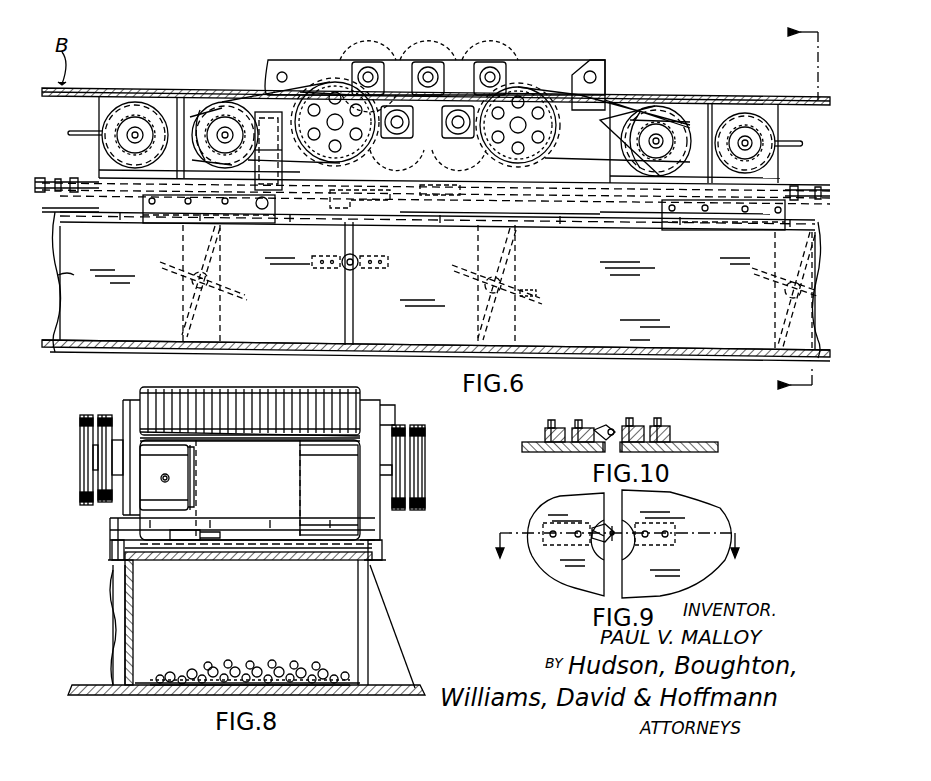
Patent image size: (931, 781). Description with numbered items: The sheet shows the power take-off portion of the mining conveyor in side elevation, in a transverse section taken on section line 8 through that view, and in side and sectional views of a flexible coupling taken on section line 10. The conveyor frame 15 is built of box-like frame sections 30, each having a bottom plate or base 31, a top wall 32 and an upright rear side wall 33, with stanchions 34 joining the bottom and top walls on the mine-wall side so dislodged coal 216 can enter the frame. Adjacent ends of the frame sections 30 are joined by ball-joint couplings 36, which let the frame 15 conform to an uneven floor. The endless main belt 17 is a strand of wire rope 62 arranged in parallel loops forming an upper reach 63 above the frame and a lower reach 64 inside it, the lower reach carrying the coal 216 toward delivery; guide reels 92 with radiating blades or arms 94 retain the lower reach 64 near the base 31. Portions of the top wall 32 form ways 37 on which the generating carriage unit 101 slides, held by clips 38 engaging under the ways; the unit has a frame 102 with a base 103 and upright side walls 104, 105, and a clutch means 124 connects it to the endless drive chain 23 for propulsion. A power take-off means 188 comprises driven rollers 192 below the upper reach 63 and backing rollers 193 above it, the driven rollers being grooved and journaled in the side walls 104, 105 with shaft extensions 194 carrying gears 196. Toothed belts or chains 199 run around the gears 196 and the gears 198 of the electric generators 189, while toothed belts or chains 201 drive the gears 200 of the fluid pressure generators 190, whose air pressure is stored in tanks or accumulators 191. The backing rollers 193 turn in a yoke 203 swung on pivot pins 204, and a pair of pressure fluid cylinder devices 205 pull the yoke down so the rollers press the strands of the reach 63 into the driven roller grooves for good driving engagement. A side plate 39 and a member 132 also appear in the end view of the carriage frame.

In FIG. 6, the section line 8— 8 is at (787, 210).
In FIG. 9, the section line 10— 10 is at (618, 560).
In FIG. 6, the conveyor frame 15 is at (72, 202).
In FIG. 8, the conveyor frame 15 is at (114, 603).
In FIG. 6, the endless main belt 17 is at (102, 88).
In FIG. 8, the endless main belt 17 is at (242, 456).
In FIG. 6, the endless drive chain 23 is at (60, 178).
In FIG. 8, the endless drive chain 23 is at (197, 558).
In FIG. 6, the frame sections 30 is at (338, 346).
In FIG. 6, the bottom plate or base 31 is at (622, 352).
In FIG. 8, the bottom plate or base 31 is at (341, 694).
In FIG. 6, the top wall 32 is at (428, 224).
In FIG. 8, the top wall 32 is at (228, 560).
In FIG. 6, the rear side wall 33 is at (60, 279).
In FIG. 8, the rear side wall 33 is at (134, 618).
In FIG. 10, the rear side wall 33 is at (536, 440).
In FIG. 9, the rear side wall 33 is at (548, 503).
In FIG. 6, the stanchions 34 is at (520, 322).
In FIG. 8, the stanchions 34 is at (362, 620).
In FIG. 6, the ball-joint couplings 36 is at (342, 268).
In FIG. 10, the ball-joint couplings 36 is at (610, 426).
In FIG. 9, the ball-joint couplings 36 is at (600, 544).
In FIG. 6, the ways 37 is at (385, 224).
In FIG. 8, the ways 37 is at (112, 552).
In FIG. 6, the clips 38 is at (170, 222).
In FIG. 8, the clips 38 is at (116, 562).
In FIG. 8, the side plate 39 is at (110, 628).
In FIG. 8, the wire rope 62 is at (150, 680).
In FIG. 6, the upper reach 63 is at (145, 88).
In FIG. 8, the upper reach 63 is at (292, 442).
In FIG. 6, the lower reach 64 is at (84, 344).
In FIG. 8, the lower reach 64 is at (237, 679).
In FIG. 6, the guide reels 92 is at (228, 300).
In FIG. 6, the blades or arms 94 is at (538, 294).
In FIG. 6, the carriage unit 101 is at (624, 212).
In FIG. 8, the carriage unit 101 is at (382, 536).
In FIG. 6, the carriage frame 102 is at (562, 214).
In FIG. 8, the carriage frame 102 is at (333, 560).
In FIG. 8, the base 103 is at (273, 560).
In FIG. 6, the side wall 104 is at (303, 222).
In FIG. 8, the side wall 104 is at (110, 541).
In FIG. 8, the side wall 105 is at (379, 528).
In FIG. 6, the clutch means 124 is at (442, 176).
In FIG. 8, the clutch means 124 is at (254, 509).
In FIG. 8, the side plate 132 is at (112, 522).
In FIG. 6, the power take-off means 188 is at (358, 52).
In FIG. 8, the power take-off means 188 is at (196, 387).
In FIG. 6, the electric generators 189 is at (222, 116).
In FIG. 8, the electric generators 189 is at (198, 446).
In FIG. 6, the fluid pressure generators 190 is at (99, 102).
In FIG. 8, the fluid pressure generators 190 is at (329, 490).
In FIG. 6, the tanks or accumulators 191 is at (108, 146).
In FIG. 8, the tanks or accumulators 191 is at (190, 505).
In FIG. 6, the driven rollers 192 is at (460, 72).
In FIG. 6, the backing rollers 193 is at (493, 56).
In FIG. 8, the backing rollers 193 is at (274, 386).
In FIG. 6, the shaft extensions 194 is at (343, 172).
In FIG. 6, the gears 196 is at (544, 146).
In FIG. 6, the gears 198 is at (640, 112).
In FIG. 6, the toothed belts or chains 199 is at (299, 78).
In FIG. 8, the toothed belts or chains 199 is at (91, 416).
In FIG. 6, the gears 200 is at (165, 132).
In FIG. 6, the toothed belts or chains 201 is at (195, 109).
In FIG. 8, the toothed belts or chains 201 is at (407, 428).
In FIG. 6, the yoke 203 is at (318, 64).
In FIG. 8, the yoke 203 is at (375, 406).
In FIG. 6, the pivot pins 204 is at (590, 77).
In FIG. 6, the pressure fluid cylinder devices 205 is at (328, 176).
In FIG. 8, the coal 216 is at (216, 671).